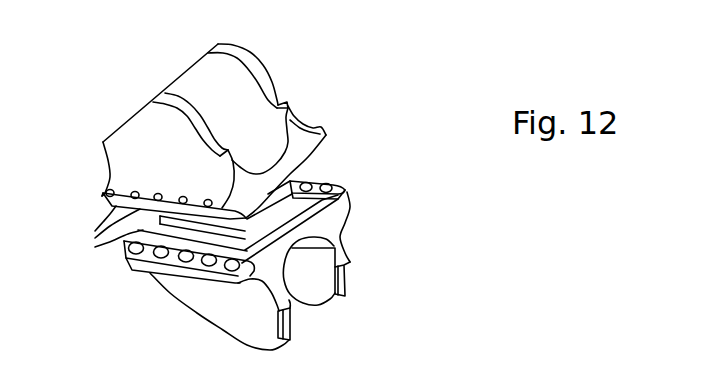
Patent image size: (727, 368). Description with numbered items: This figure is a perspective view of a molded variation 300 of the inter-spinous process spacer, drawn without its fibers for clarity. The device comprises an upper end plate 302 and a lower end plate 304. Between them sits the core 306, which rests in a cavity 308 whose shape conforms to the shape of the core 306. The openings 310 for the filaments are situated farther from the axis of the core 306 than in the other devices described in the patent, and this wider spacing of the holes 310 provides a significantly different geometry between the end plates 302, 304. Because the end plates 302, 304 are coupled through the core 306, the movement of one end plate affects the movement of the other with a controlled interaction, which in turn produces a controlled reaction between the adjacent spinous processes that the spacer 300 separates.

The molded variation of the inter-spinous process spacer 300 is at (397, 90).
The upper end plate 302 is at (275, 85).
The lower end plate 304 is at (333, 218).
The core 306 is at (242, 225).
The cavity 308 is at (308, 184).
The openings for filaments 310 is at (92, 235).